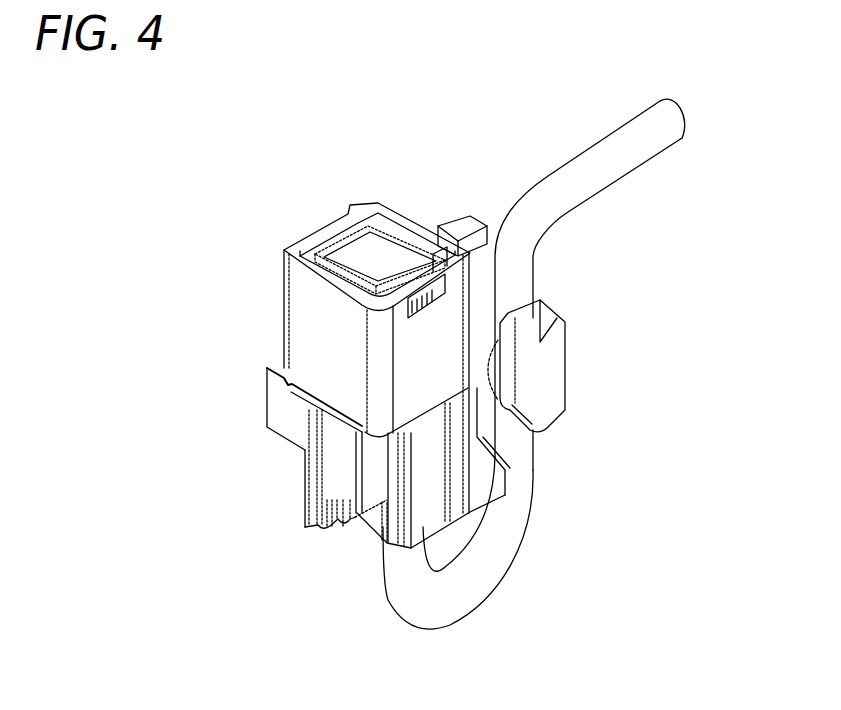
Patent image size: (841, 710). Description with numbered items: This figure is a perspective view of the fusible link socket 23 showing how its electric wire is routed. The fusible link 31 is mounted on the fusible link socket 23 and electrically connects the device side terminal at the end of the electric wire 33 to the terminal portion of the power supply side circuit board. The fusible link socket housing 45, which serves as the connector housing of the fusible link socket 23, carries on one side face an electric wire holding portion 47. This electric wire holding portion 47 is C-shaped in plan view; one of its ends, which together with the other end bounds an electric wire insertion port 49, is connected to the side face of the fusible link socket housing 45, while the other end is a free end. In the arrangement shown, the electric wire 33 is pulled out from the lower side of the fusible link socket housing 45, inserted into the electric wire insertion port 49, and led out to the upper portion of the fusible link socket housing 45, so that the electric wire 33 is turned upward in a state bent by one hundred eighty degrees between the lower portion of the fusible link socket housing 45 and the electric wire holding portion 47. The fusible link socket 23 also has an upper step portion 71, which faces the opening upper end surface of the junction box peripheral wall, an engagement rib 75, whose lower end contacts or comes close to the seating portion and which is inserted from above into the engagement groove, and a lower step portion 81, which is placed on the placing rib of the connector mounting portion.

The fusible link socket 23 is at (329, 381).
The fusible link 31 is at (346, 243).
The electric wire 33 is at (625, 153).
The fusible link socket housing 45 is at (270, 305).
The electric wire holding portion 47 is at (547, 375).
The electric wire insertion port 49 is at (493, 413).
The upper step portion 71 is at (287, 440).
The engagement rib 75 is at (302, 490).
The lower step portion 81 is at (342, 530).